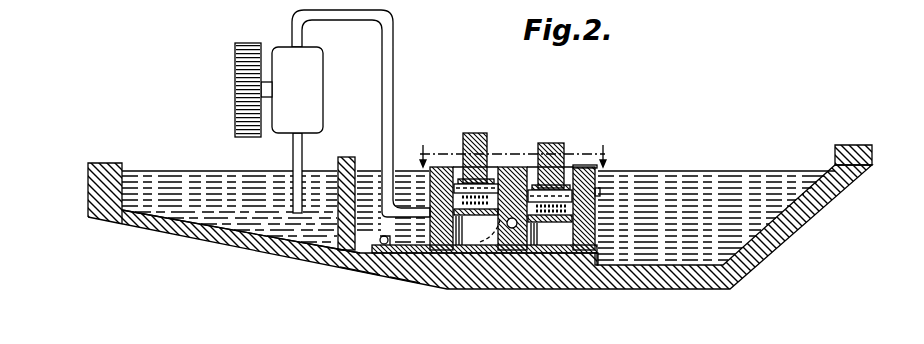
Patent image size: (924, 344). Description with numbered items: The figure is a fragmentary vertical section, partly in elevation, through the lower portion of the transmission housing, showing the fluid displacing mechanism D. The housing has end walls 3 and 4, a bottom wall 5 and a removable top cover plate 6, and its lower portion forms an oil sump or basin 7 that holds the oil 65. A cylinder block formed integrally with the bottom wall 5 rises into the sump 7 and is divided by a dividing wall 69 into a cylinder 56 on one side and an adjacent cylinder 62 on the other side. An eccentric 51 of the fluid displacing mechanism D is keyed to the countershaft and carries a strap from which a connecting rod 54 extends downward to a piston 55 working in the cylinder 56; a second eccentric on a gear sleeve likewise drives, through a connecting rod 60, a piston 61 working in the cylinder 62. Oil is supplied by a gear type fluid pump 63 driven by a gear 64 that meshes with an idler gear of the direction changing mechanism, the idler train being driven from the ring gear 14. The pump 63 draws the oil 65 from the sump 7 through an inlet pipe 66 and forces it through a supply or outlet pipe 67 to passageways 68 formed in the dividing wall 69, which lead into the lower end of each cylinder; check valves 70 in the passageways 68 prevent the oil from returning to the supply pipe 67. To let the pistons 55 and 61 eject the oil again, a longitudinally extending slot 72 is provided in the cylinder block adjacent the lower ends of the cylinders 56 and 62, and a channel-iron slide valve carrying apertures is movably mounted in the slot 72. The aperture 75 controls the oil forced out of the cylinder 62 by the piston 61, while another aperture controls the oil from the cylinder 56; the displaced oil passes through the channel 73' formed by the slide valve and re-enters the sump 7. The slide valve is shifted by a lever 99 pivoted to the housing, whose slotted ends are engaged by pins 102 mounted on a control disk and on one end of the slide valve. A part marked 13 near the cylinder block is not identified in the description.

The end wall 3 is at (92, 190).
The end wall 4 is at (858, 150).
The bottom wall 5 is at (291, 255).
The top cover plate 6 is at (520, 154).
The oil sump 7 is at (250, 223).
The bearing 13 is at (410, 256).
The ring gear 14 is at (418, 252).
The eccentric 51 is at (590, 268).
The connecting rod 54 is at (478, 133).
The piston 55 is at (498, 167).
The cylinder 56 is at (441, 167).
The connecting rod 60 is at (573, 167).
The piston 61 is at (590, 152).
The cylinder 62 is at (600, 192).
The fluid pump 63 is at (277, 128).
The gear 64 is at (235, 99).
The oil 65 is at (185, 172).
The inlet pipe 66 is at (302, 148).
The supply pipe 67 is at (393, 93).
The passageways 68 is at (508, 252).
The dividing wall 69 is at (523, 167).
The check valves 70 is at (470, 258).
The slot 72 is at (440, 256).
The channel 73' is at (383, 304).
The aperture 75 is at (552, 258).
The lever 99 is at (380, 242).
The pins 102 is at (346, 289).
The fluid displacing mechanism D is at (478, 256).